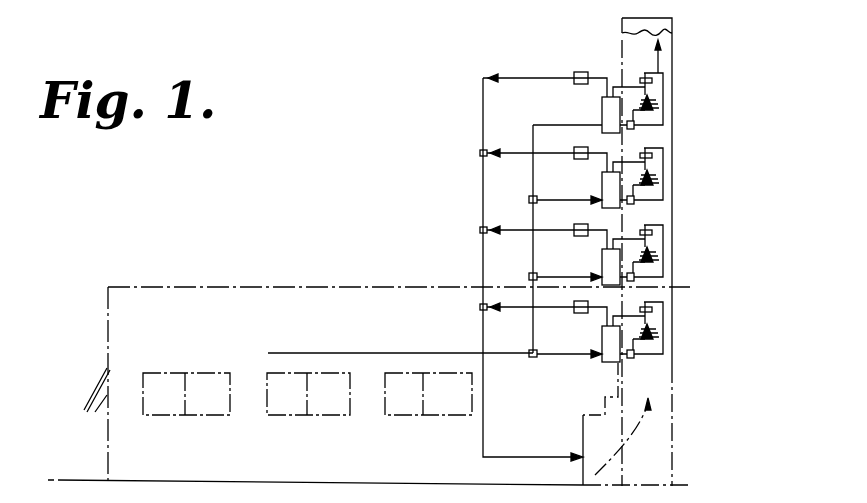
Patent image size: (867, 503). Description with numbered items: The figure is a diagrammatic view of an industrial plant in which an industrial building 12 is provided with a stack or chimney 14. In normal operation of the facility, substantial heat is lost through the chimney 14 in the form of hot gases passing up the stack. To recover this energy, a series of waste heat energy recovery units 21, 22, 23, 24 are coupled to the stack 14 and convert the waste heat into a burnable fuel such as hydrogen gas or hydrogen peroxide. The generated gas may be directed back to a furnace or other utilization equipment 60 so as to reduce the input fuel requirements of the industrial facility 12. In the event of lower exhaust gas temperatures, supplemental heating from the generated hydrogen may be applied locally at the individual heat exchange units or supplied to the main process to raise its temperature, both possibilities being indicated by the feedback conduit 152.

The industrial building 12 is at (279, 320).
The stack 14 is at (676, 88).
The waste heat energy recovery unit 21 is at (628, 315).
The waste heat energy recovery unit 22 is at (628, 238).
The waste heat energy recovery unit 23 is at (628, 160).
The waste heat energy recovery unit 24 is at (632, 80).
The utilization equipment 60 is at (583, 432).
The feedback conduit 152 is at (483, 438).